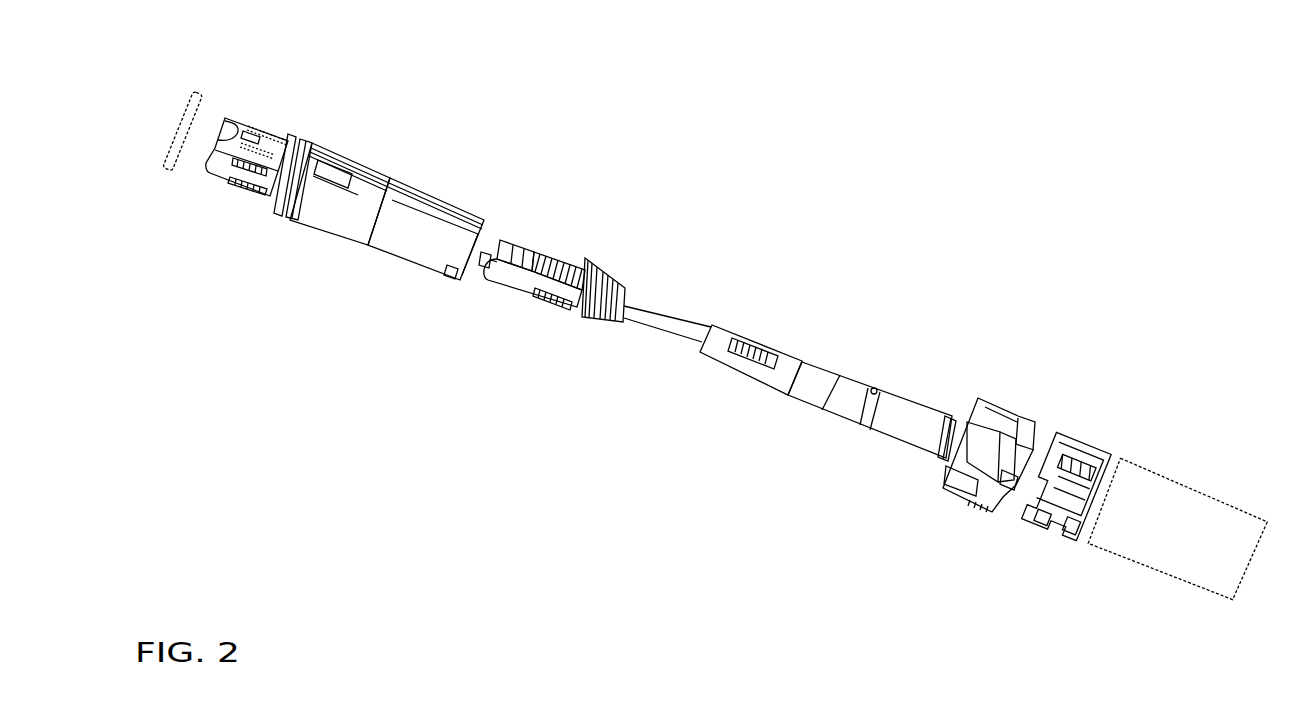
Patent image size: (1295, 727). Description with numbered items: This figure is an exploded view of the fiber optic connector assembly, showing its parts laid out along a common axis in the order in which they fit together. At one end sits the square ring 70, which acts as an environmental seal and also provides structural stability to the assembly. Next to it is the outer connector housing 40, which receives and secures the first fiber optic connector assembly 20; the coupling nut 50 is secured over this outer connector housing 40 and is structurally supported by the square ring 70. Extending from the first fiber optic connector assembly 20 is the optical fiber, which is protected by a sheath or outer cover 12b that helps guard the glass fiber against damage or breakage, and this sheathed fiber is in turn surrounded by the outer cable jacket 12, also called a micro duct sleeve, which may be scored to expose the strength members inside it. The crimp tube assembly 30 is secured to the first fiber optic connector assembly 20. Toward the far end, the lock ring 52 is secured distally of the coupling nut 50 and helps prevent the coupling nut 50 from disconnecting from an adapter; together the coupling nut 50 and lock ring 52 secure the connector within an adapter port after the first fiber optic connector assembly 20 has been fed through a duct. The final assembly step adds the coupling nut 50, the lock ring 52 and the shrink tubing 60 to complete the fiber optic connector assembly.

The outer cable jacket 12 is at (726, 366).
The sheath 12b is at (670, 322).
The first fiber optic connector assembly 20 is at (645, 275).
The crimp tube assembly 30 is at (950, 410).
The outer connector housing 40 is at (452, 305).
The coupling nut 50 is at (967, 490).
The lock ring 52 is at (1084, 454).
The shrink tubing 60 is at (1163, 536).
The square ring 70 is at (208, 90).